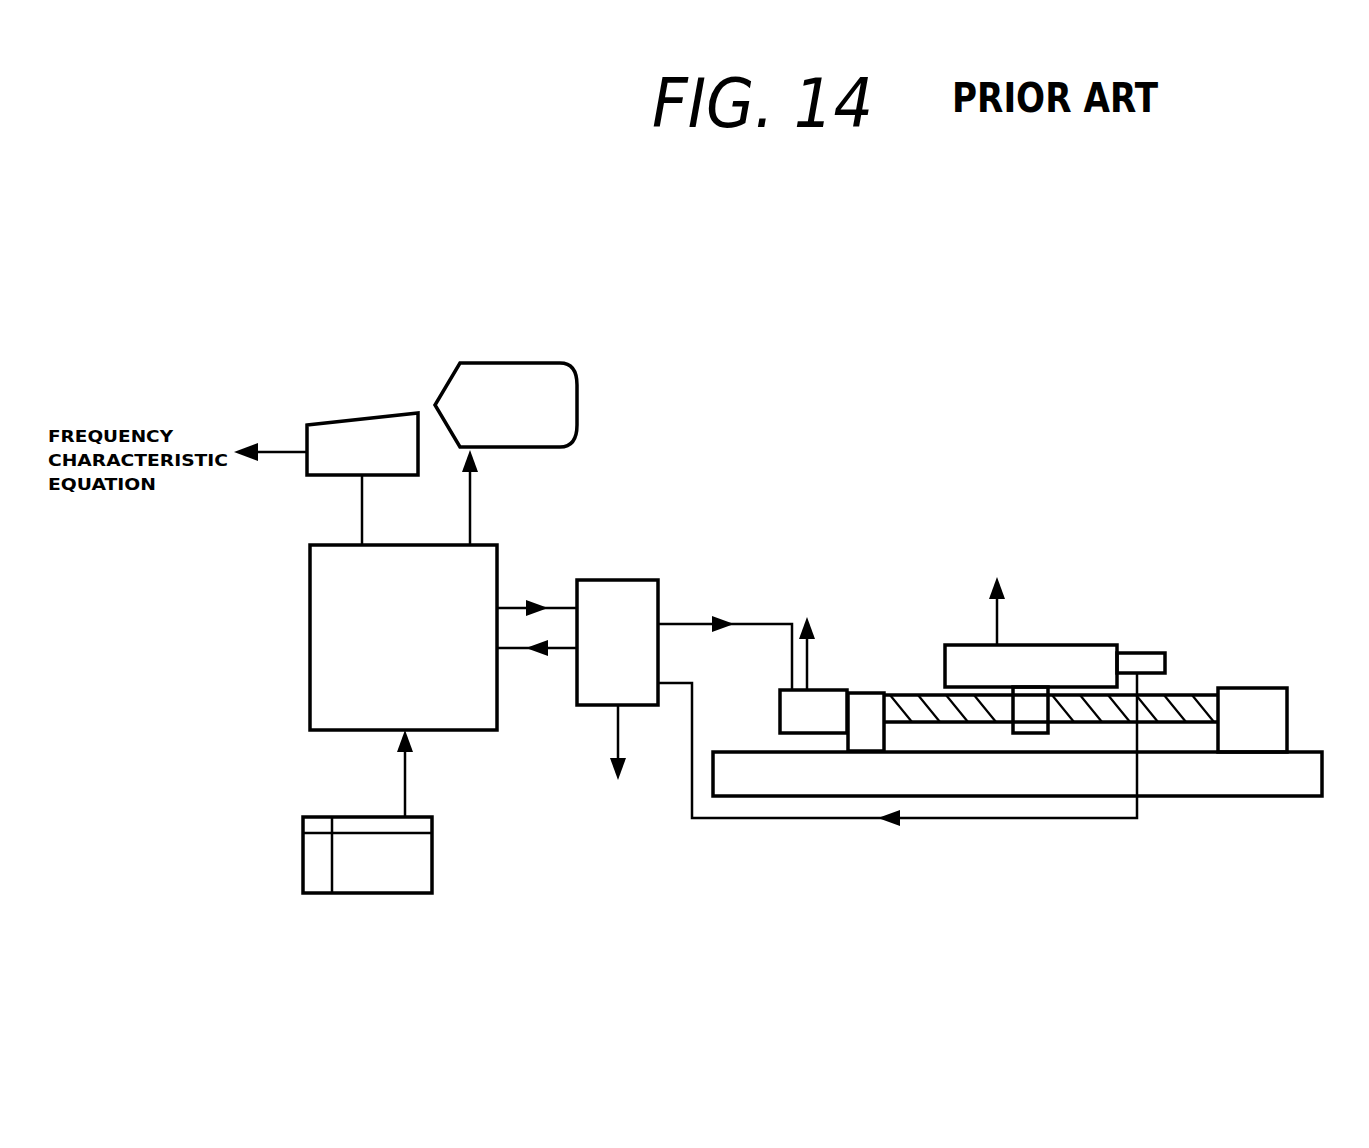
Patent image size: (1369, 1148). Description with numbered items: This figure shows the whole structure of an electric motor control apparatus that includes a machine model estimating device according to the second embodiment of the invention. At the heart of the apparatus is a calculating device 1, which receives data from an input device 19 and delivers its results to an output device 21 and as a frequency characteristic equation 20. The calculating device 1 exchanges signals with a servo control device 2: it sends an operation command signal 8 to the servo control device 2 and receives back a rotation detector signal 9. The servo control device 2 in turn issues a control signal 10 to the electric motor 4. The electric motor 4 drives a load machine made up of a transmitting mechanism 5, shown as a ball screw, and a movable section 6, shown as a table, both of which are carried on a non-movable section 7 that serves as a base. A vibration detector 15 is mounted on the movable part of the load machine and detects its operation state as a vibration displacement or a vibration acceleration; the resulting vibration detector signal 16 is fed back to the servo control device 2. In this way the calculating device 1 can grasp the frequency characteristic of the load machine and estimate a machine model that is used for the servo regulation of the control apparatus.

The calculating device 1 is at (310, 580).
The servo control device 2 is at (626, 580).
The electric motor 4 is at (820, 700).
The transmitting mechanism 5 is at (901, 710).
The movable section 6 is at (1058, 656).
The non-movable section 7 is at (1200, 778).
The operation command signal 8 is at (520, 606).
The rotation detector signal 9 is at (548, 652).
The control signal 10 is at (747, 623).
The vibration detector 15 is at (1150, 661).
The vibration detector signal 16 is at (782, 819).
The input device 19 is at (418, 866).
The frequency characteristic equation 20 is at (342, 432).
The output device 21 is at (535, 382).